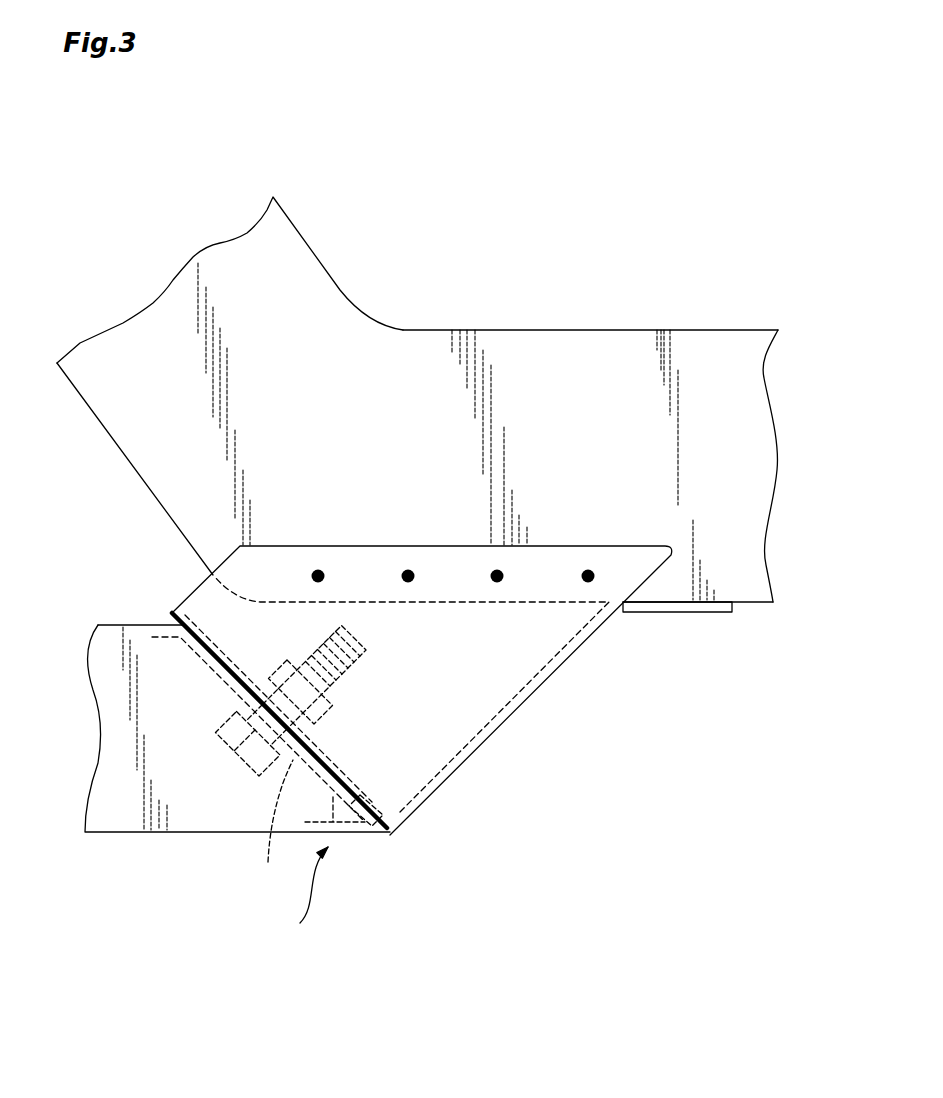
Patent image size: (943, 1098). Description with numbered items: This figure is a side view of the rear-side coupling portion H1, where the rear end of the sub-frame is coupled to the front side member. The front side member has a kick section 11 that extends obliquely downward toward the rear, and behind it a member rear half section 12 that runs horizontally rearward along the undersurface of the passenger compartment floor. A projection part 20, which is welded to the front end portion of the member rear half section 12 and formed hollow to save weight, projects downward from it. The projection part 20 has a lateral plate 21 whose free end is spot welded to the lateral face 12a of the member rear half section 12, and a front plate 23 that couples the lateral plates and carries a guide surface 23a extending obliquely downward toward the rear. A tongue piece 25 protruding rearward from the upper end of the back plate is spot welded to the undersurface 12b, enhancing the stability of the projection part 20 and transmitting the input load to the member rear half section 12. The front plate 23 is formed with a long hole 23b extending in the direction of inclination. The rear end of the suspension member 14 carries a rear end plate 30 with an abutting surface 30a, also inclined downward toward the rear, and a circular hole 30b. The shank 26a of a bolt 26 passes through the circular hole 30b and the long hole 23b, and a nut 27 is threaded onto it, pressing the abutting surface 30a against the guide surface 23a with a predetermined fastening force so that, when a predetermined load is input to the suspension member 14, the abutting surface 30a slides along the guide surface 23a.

The kick section 11 is at (307, 267).
The member rear half section 12 is at (767, 395).
The lateral face 12a is at (622, 342).
The undersurface 12b is at (757, 606).
The suspension member 14 is at (197, 836).
The projection part 20 is at (553, 680).
The lateral plate 21 is at (477, 707).
The front plate 23 is at (338, 770).
The guide surface 23a is at (190, 648).
The long hole 23b is at (232, 662).
The tongue piece 25 is at (653, 616).
The bolt 26 is at (237, 757).
The shank 26a is at (335, 678).
The nut 27 is at (320, 725).
The rear end plate 30 is at (340, 823).
The abutting surface 30a is at (363, 795).
The circular hole 30b is at (270, 825).
The rear-side coupling portion H1 is at (294, 894).